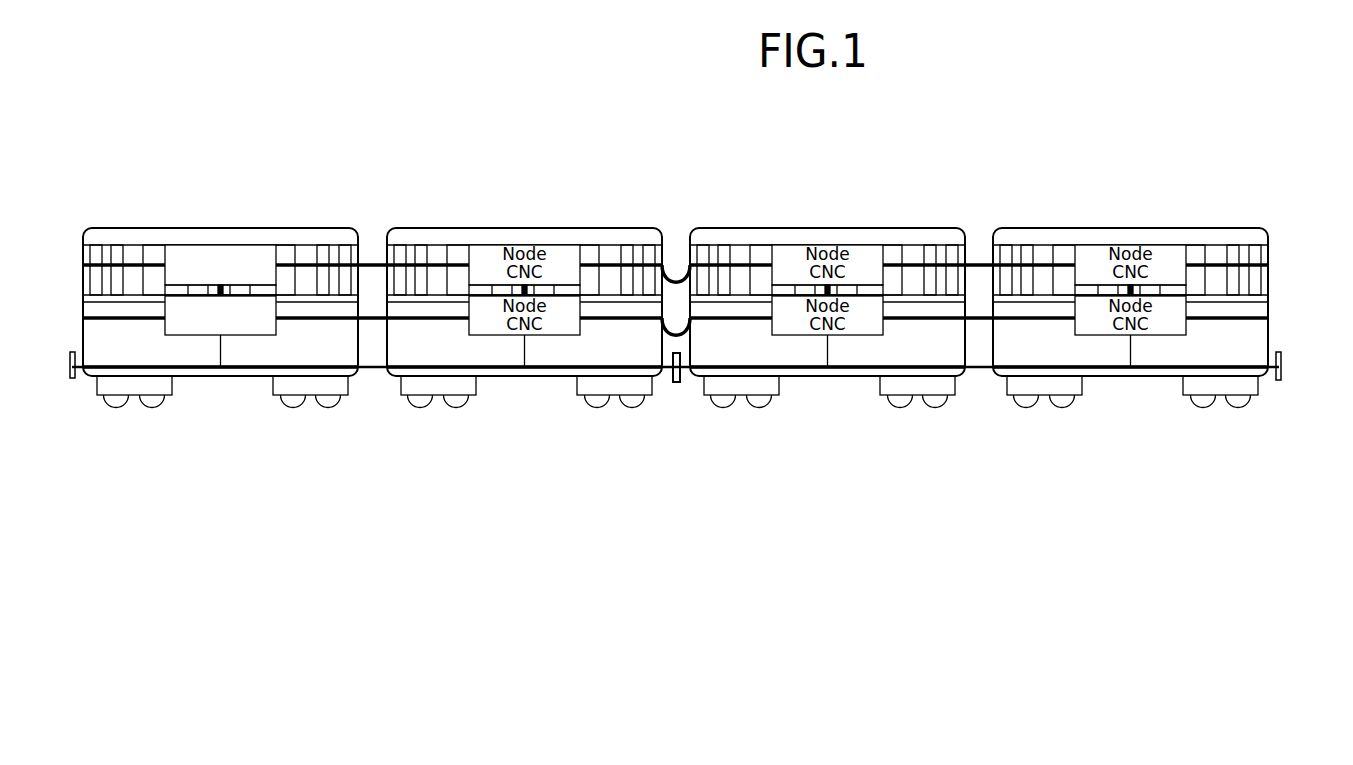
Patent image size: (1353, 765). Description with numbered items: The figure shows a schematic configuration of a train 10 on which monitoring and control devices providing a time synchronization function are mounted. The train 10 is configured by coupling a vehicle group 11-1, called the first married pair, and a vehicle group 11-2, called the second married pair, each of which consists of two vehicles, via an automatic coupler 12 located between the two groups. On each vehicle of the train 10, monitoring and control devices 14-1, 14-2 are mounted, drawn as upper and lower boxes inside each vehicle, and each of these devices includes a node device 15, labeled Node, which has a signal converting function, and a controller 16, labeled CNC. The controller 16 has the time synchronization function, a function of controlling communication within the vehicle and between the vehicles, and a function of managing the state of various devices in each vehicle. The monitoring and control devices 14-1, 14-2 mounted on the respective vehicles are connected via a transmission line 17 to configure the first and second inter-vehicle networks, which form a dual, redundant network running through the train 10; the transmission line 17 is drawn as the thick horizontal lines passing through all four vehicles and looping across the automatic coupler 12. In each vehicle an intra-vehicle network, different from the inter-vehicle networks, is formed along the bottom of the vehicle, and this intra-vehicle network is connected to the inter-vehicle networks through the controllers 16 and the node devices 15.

The train 10 is at (653, 172).
The vehicle group 11-1 is at (95, 470).
The vehicle group 11-2 is at (685, 470).
The automatic coupler 12 is at (676, 383).
The monitoring and control device 14-1 is at (247, 239).
The monitoring and control device 14-2 is at (220, 356).
The node device 15 is at (245, 223).
The controller 16 is at (265, 241).
The transmission line 17 is at (980, 262).